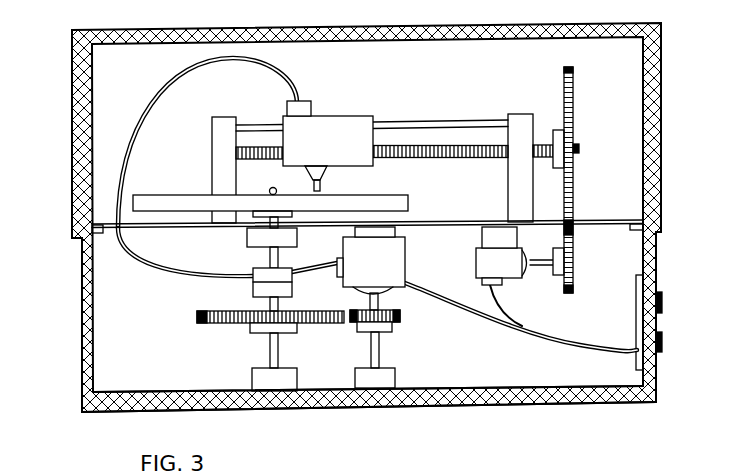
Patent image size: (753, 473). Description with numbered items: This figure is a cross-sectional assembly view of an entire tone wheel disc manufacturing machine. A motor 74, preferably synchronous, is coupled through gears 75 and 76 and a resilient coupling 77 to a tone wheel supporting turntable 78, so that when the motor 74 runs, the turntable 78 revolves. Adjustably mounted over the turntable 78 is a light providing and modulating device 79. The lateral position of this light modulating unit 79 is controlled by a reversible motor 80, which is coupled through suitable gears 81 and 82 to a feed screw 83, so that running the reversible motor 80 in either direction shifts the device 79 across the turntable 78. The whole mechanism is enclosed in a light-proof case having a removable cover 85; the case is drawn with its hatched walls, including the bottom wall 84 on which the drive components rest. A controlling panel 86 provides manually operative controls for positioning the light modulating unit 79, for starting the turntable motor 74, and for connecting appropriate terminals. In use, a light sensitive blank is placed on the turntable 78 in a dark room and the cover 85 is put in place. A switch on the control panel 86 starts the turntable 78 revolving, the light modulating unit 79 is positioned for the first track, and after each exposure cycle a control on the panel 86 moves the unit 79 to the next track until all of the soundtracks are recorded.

The motor 74 is at (410, 290).
The gear 75 is at (402, 325).
The gear 76 is at (197, 318).
The resilient coupling 77 is at (253, 291).
The tone wheel supporting turntable 78 is at (166, 195).
The light providing and modulating device 79 is at (340, 116).
The reversible motor 80 is at (476, 262).
The gear 81 is at (576, 285).
The gear 82 is at (576, 178).
The feed screw 83 is at (398, 146).
The housing bottom wall 84 is at (345, 405).
The removable cover 85 is at (72, 147).
The controlling panel 86 is at (661, 335).